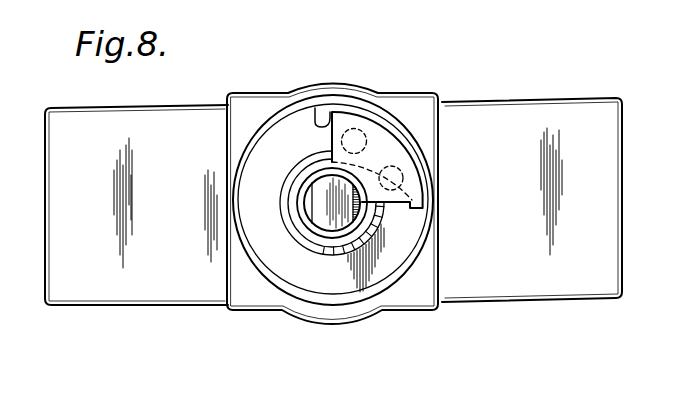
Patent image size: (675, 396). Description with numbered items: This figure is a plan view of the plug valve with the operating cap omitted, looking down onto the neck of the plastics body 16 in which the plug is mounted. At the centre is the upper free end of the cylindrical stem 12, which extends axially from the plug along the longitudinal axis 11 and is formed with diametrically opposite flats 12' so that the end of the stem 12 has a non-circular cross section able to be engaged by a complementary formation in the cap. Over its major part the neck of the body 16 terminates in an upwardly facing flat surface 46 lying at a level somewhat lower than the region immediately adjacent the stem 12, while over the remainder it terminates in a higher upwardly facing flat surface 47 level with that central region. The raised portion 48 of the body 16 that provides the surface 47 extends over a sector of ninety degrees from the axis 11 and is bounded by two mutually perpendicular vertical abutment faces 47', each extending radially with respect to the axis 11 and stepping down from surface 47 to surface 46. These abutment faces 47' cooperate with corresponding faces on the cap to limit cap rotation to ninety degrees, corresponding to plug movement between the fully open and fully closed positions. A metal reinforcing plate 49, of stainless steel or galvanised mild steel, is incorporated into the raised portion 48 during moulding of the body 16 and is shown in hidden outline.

The longitudinal axis 11 is at (328, 200).
The stem 12 is at (332, 258).
The flats 12' is at (336, 249).
The body 16 is at (251, 105).
The upwardly facing flat surface 46 is at (288, 277).
The upwardly facing flat surface 47 is at (362, 100).
The vertical abutment faces 47' is at (396, 141).
The raised portion of the body 48 is at (407, 143).
The metal reinforcing plate 49 is at (383, 128).